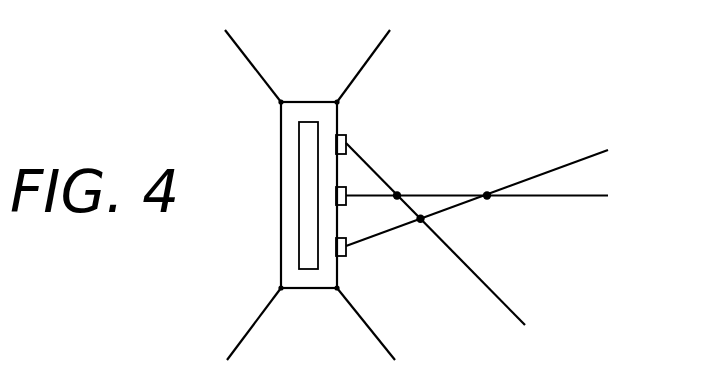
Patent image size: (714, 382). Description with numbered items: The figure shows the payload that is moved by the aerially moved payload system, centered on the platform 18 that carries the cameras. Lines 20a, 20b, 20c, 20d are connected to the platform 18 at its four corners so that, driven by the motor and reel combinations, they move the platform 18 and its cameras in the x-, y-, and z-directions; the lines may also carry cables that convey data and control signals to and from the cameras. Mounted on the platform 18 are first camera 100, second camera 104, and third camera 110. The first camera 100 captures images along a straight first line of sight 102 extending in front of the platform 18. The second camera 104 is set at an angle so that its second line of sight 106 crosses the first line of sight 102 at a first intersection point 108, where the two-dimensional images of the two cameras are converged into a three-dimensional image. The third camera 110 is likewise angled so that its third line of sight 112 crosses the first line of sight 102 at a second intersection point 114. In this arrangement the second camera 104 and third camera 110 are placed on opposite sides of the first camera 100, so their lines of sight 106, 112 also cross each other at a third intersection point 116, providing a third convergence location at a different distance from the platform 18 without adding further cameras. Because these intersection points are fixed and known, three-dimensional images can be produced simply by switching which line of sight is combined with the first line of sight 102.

The platform 18 is at (281, 160).
The line 20a is at (247, 62).
The line 20b is at (360, 68).
The line 20c is at (351, 312).
The line 20d is at (248, 330).
The first camera 100 is at (347, 203).
The first line of sight 102 is at (570, 197).
The second camera 104 is at (347, 138).
The second line of sight 106 is at (495, 290).
The first intersection point 108 is at (398, 193).
The third camera 110 is at (347, 253).
The third line of sight 112 is at (585, 158).
The second intersection point 114 is at (487, 190).
The third intersection point 116 is at (423, 221).